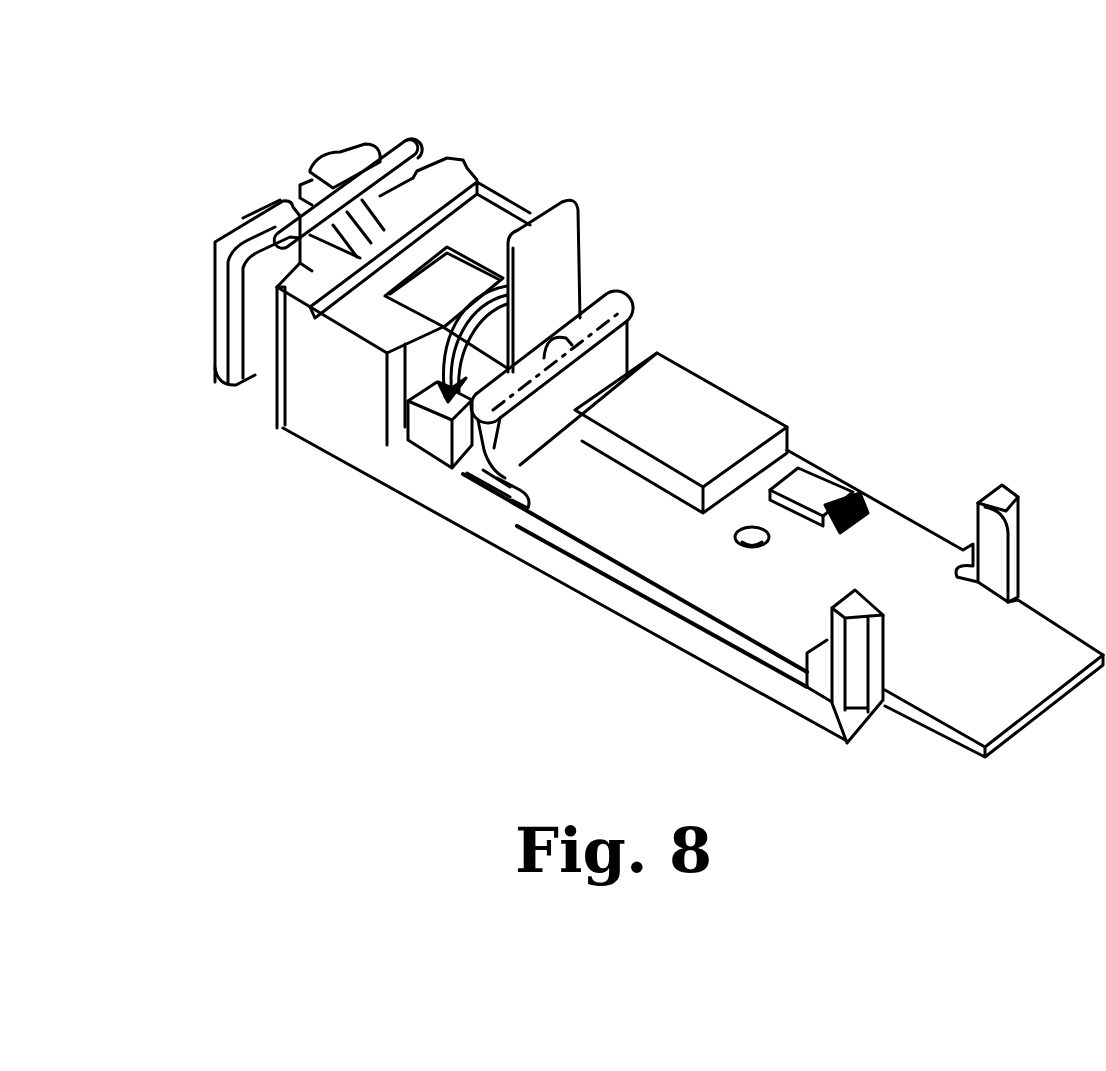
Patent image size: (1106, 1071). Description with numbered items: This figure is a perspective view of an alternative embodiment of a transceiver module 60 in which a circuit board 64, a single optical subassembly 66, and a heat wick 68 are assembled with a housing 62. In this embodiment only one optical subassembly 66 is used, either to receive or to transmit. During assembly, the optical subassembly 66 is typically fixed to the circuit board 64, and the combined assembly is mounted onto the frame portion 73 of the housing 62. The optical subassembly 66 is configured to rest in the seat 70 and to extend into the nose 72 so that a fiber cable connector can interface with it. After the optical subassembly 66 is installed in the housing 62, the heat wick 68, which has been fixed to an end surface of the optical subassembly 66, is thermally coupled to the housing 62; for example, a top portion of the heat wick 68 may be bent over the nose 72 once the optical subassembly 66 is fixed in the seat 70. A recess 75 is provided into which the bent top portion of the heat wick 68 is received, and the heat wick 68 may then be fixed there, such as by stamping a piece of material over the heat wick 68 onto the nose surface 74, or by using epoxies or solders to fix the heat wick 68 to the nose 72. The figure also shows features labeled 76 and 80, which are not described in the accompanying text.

The transceiver module 60 is at (258, 156).
The housing 62 is at (720, 668).
The circuit board 64 is at (913, 513).
The optical subassembly 66 is at (425, 408).
The heat wick 68 is at (572, 250).
The seat 70 is at (427, 443).
The nose 72 is at (343, 372).
The frame portion 73 is at (607, 593).
The nose surface 74 is at (498, 230).
The recess 75 is at (433, 292).
The front edge of base 76 is at (477, 533).
The clip 80 is at (605, 300).